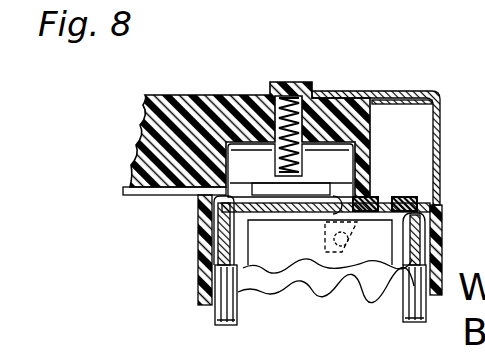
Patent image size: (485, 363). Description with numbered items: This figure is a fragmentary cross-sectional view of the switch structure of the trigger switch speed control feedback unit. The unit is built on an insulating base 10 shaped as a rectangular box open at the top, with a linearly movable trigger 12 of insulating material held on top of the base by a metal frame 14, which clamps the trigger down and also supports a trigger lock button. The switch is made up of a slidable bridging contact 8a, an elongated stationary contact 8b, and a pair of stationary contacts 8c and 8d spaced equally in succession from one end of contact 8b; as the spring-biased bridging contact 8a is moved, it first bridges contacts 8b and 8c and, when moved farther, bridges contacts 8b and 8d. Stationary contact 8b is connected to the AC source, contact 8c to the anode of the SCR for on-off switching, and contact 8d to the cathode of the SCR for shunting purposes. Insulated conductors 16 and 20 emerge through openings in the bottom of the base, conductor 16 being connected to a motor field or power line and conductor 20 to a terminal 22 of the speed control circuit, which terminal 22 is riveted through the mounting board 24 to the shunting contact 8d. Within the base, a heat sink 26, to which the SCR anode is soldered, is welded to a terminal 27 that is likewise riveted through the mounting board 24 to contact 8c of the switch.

The slidable bridging contact 8a is at (336, 172).
The elongated stationary contact 8b is at (247, 183).
The stationary contact 8c is at (373, 194).
The stationary contact 8d is at (407, 195).
The insulating base 10 is at (197, 232).
The trigger 12 is at (142, 130).
The metal frame 14 is at (441, 118).
The insulated conductor 16 is at (237, 318).
The insulated conductor 20 is at (404, 302).
The terminal 22 is at (419, 236).
The mounting board 24 is at (421, 200).
The heat sink 26 is at (297, 258).
The terminal 27 is at (323, 237).